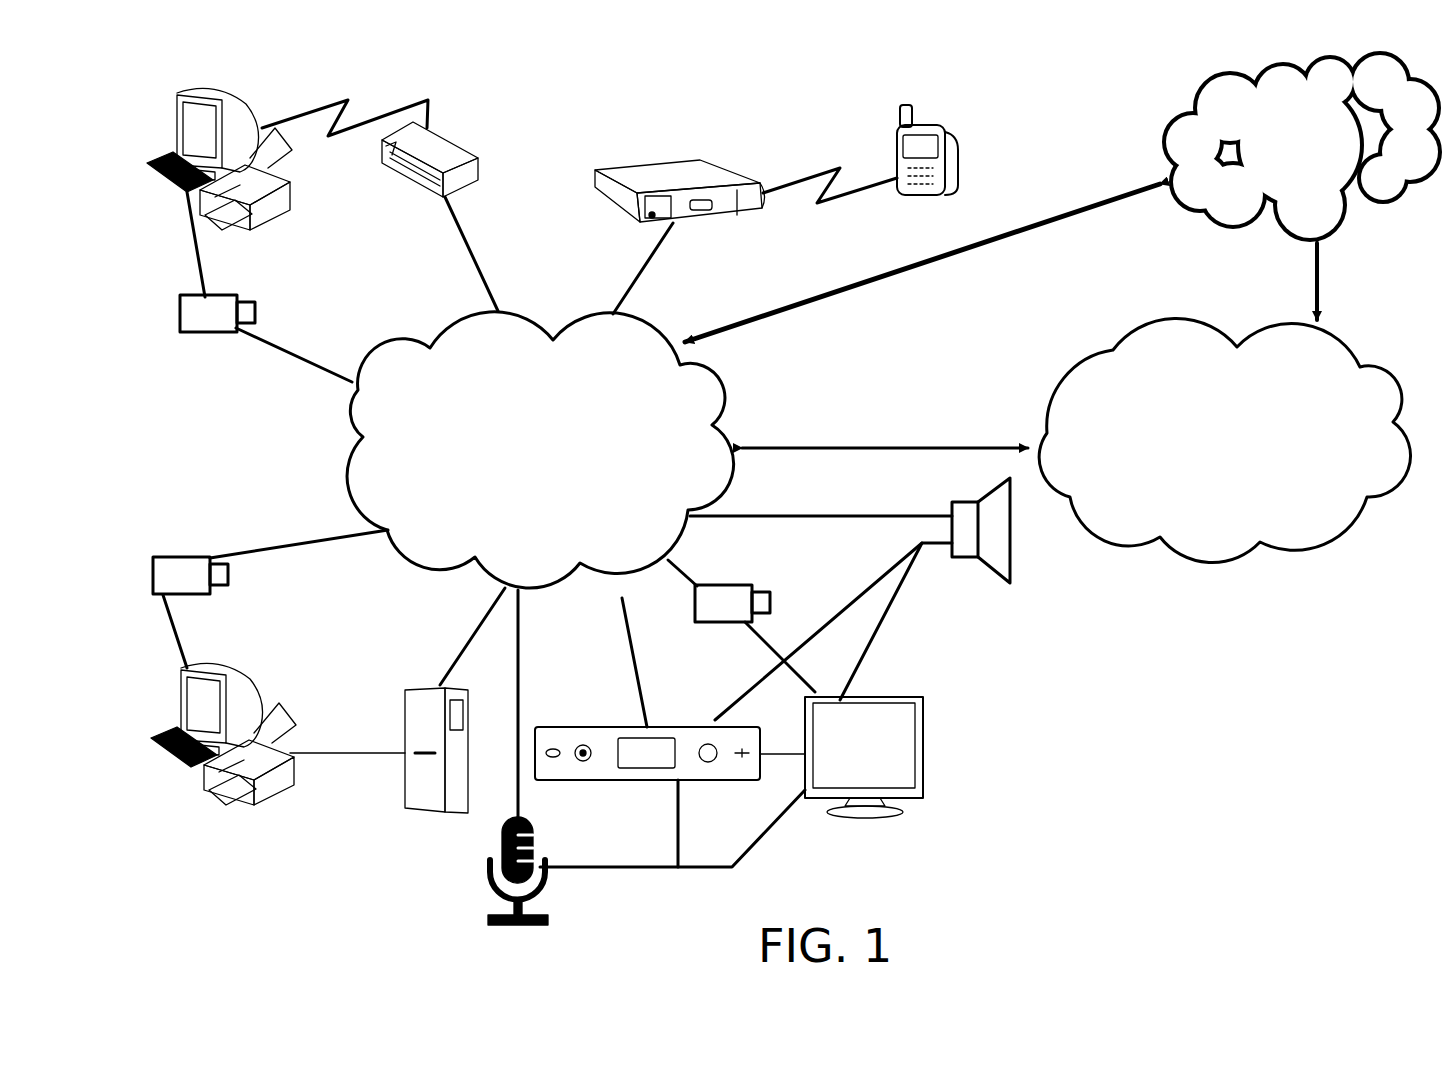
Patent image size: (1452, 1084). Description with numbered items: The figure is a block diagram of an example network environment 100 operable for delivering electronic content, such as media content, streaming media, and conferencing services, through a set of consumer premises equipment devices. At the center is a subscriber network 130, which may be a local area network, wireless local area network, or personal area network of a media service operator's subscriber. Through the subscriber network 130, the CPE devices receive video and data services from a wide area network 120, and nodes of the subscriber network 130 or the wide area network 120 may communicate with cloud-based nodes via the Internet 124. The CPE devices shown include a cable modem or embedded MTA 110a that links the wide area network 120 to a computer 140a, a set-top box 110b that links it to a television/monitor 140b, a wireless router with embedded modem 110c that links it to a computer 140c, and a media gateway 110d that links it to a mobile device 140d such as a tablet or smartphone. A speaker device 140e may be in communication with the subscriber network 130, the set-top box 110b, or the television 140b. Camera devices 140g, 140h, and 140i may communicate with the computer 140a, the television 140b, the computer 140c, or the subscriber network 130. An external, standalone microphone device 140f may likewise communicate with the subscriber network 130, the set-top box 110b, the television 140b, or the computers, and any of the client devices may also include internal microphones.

The network environment 100 is at (1325, 830).
The modem 110a is at (442, 817).
The set-top box 110b is at (640, 780).
The wireless router 110c is at (465, 140).
The media gateway 110d is at (690, 158).
The wide area network 120 is at (1210, 573).
The Internet 124 is at (1388, 208).
The subscriber network 130 is at (450, 575).
The computer 140a is at (188, 668).
The television/monitor 140b is at (877, 697).
The computer 140c is at (193, 88).
The mobile device 140d is at (957, 123).
The speaker device 140e is at (1013, 550).
The microphone device 140f is at (500, 842).
The camera device 140g is at (722, 585).
The camera device 140h is at (218, 295).
The camera device 140i is at (203, 556).